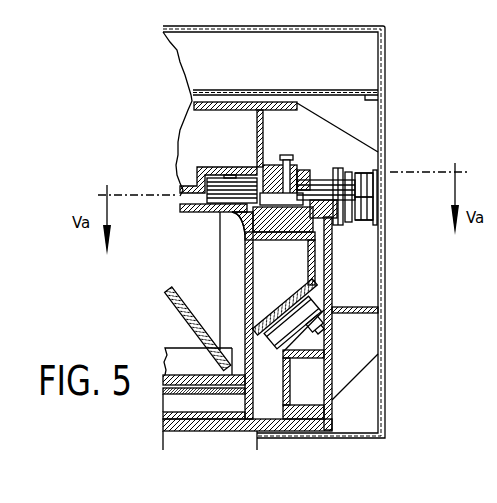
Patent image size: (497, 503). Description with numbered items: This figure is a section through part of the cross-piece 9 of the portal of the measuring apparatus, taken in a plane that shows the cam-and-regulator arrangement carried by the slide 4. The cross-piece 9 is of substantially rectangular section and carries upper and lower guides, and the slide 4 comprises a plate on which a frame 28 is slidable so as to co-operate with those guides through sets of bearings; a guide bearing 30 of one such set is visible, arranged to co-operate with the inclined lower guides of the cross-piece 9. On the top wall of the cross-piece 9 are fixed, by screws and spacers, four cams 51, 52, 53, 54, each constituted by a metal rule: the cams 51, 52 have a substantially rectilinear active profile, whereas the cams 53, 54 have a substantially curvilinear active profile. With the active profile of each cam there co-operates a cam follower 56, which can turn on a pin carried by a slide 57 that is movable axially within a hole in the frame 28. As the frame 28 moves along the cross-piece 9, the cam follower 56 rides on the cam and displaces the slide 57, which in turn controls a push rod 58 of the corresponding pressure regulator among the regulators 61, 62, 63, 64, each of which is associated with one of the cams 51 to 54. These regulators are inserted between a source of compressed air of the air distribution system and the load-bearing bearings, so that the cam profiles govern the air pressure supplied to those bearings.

The slide 4 is at (364, 125).
The cross-piece 9 is at (228, 292).
The frame 28 is at (217, 118).
The guide bearing 30 is at (315, 292).
The cam 51 is at (226, 297).
The cam 52 is at (205, 212).
The cam 53 is at (180, 208).
The cam 54 is at (196, 172).
The cam follower 56 is at (290, 230).
The slide 57 is at (297, 170).
The push rod 58 is at (359, 186).
The pressure regulator 61 is at (371, 215).
The pressure regulator 62 is at (384, 180).
The pressure regulator 63 is at (377, 172).
The pressure regulator 64 is at (364, 164).